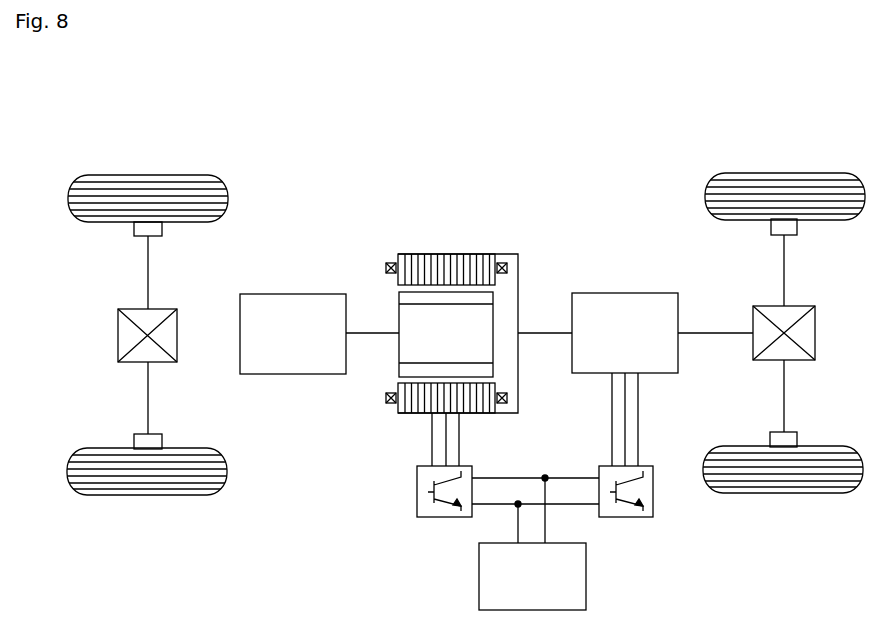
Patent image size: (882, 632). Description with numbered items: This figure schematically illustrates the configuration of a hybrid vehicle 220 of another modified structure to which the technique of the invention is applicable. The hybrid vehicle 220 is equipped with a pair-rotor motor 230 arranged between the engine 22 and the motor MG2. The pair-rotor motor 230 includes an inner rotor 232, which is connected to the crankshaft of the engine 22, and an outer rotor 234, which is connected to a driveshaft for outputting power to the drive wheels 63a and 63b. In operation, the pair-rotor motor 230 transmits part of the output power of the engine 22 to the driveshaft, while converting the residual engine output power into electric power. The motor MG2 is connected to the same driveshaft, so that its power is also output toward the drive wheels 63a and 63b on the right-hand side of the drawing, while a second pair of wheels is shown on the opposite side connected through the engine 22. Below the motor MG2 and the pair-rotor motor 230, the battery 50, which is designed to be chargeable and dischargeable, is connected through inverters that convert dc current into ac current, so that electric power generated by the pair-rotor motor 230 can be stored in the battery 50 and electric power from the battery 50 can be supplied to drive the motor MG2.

The engine 22 is at (296, 294).
The hybrid vehicle 220 is at (524, 157).
The pair-rotor motor 230 is at (428, 278).
The inner rotor 232 is at (399, 315).
The outer rotor 234 is at (455, 254).
The motor MG2 is at (627, 293).
The battery 50 is at (586, 576).
The drive wheel 63a is at (783, 173).
The drive wheel 63b is at (783, 493).